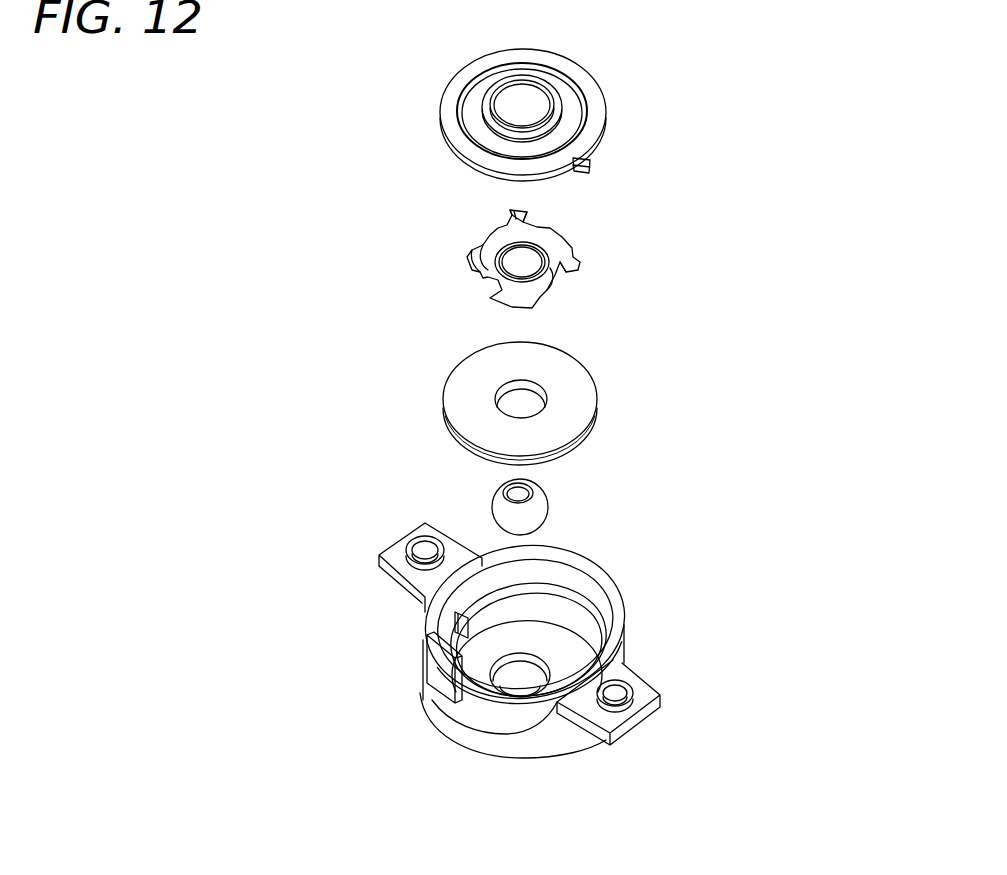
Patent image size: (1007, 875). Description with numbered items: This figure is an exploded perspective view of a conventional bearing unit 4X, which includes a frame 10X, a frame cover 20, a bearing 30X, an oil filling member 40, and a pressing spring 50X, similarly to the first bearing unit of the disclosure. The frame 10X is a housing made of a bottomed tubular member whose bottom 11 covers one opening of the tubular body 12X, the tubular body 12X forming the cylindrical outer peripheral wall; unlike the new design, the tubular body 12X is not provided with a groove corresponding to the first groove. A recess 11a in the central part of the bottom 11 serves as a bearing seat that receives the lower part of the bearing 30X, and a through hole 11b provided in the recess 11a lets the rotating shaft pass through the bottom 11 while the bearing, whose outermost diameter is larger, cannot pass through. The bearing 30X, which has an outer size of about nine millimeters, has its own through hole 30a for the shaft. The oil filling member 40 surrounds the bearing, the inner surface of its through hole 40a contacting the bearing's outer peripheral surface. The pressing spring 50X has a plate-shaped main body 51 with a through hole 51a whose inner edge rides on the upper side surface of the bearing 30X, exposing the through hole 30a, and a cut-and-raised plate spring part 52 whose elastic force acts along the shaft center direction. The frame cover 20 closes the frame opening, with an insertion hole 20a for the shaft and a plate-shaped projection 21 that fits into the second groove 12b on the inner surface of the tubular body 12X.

The conventional bearing unit 4X is at (317, 87).
The frame cover 20 is at (533, 93).
The insertion hole 20a is at (520, 107).
The projection 21 is at (570, 163).
The pressing spring 50X is at (542, 230).
The plate spring part 52 is at (545, 225).
The main body 51 is at (550, 262).
The through hole 51a is at (523, 262).
The oil filling member 40 is at (555, 386).
The through hole 40a is at (520, 402).
The bearing 30X is at (417, 500).
The through hole 30a is at (518, 492).
The frame 10X is at (523, 671).
The tubular body 12X is at (598, 623).
The second groove 12b is at (465, 620).
The bottom 11 is at (565, 660).
The recess 11a is at (427, 736).
The through hole 11b is at (518, 690).